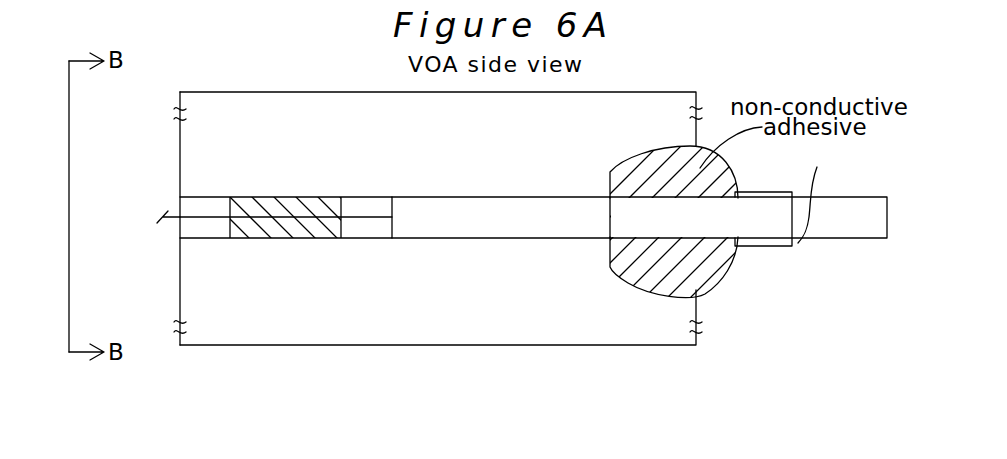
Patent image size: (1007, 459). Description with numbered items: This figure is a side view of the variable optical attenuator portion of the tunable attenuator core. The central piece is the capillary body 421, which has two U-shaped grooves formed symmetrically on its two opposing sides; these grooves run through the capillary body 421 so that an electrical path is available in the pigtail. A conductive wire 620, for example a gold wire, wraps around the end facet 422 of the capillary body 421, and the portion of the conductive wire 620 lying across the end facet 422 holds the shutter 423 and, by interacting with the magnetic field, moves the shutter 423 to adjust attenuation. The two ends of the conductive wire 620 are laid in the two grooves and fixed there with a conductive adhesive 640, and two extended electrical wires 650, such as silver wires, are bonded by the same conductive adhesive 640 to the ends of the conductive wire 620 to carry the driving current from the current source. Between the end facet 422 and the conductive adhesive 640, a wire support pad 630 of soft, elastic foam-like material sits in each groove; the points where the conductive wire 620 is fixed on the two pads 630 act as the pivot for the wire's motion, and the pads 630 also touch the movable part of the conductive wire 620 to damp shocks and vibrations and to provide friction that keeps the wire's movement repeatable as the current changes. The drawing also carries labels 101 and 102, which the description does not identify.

The capillary body 421 is at (627, 90).
The end facet 422 is at (176, 143).
The shutter 423 is at (170, 212).
The conductive wire 620 is at (193, 220).
The wire support pad 630 is at (273, 229).
The conductive adhesive 640 is at (437, 223).
The extended electrical wires 650 is at (845, 227).
The electrical wire connection 101 is at (830, 197).
The electrical wire connection 102 is at (795, 185).